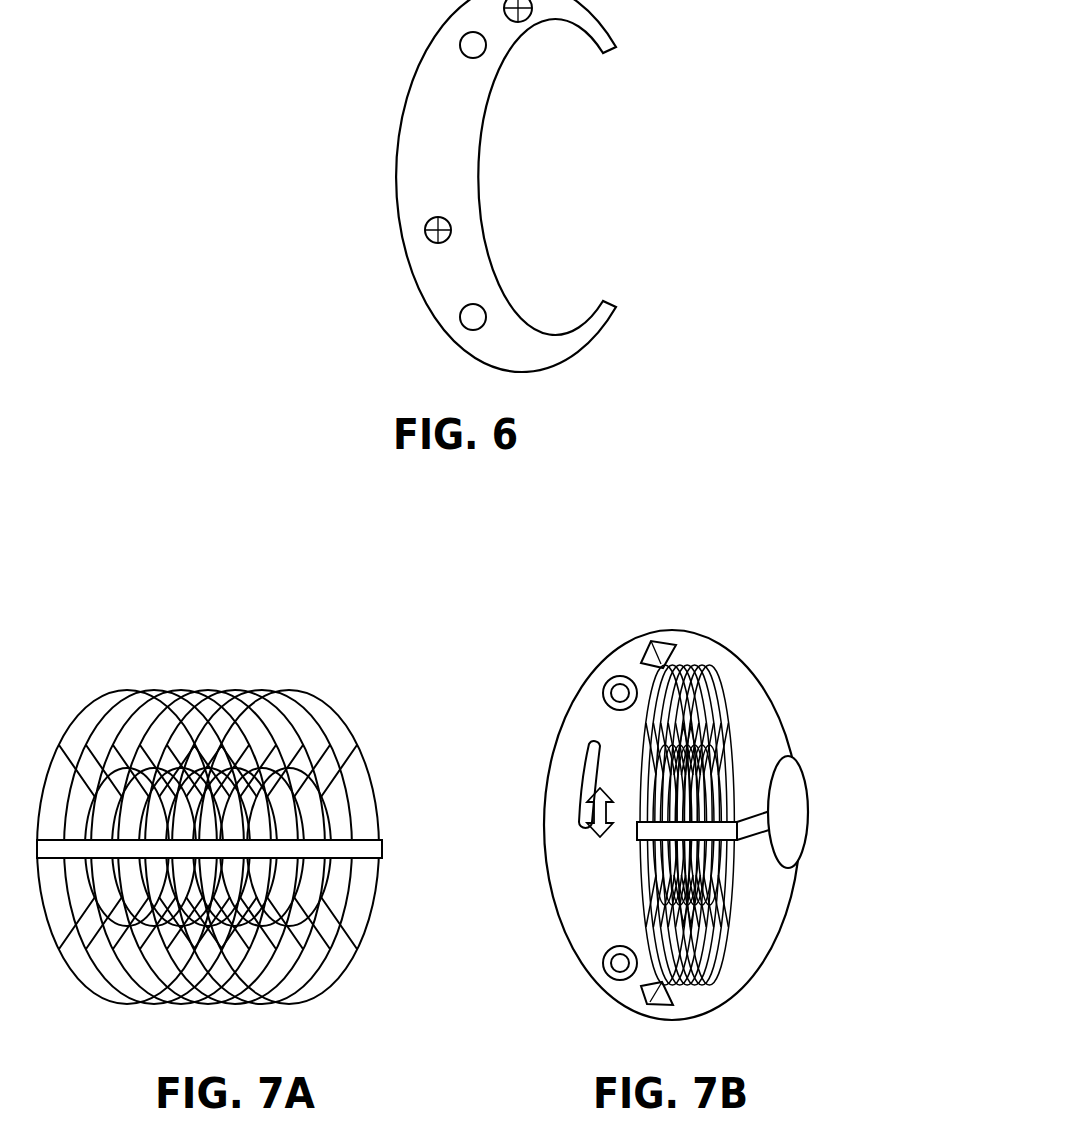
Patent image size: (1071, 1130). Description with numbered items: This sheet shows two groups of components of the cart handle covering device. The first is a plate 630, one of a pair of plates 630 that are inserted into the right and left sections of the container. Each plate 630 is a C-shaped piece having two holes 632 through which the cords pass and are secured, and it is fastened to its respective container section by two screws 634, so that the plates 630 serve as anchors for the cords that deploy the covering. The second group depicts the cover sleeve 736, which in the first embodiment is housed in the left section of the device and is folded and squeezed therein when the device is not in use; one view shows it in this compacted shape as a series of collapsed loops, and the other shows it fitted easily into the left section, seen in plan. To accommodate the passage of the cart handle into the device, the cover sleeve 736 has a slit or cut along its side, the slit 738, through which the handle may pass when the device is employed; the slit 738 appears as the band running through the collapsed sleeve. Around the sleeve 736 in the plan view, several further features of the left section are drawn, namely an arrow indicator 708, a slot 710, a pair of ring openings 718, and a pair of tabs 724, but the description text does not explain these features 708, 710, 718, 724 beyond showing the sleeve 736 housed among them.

In FIG. 6, the plate 630 is at (536, 373).
In FIG. 6, the holes 632 is at (459, 49).
In FIG. 6, the screws 634 is at (522, 23).
In FIG. 7B, the adjustment arrow indicator 708 is at (594, 834).
In FIG. 7B, the slot 710 is at (582, 775).
In FIG. 7B, the fastener openings 718 is at (603, 698).
In FIG. 7B, the tabs 724 is at (676, 652).
In FIG. 7B, the cover sleeve 736 is at (727, 932).
In FIG. 7A, the slit 738 is at (383, 850).
In FIG. 7B, the slit 738 is at (752, 838).